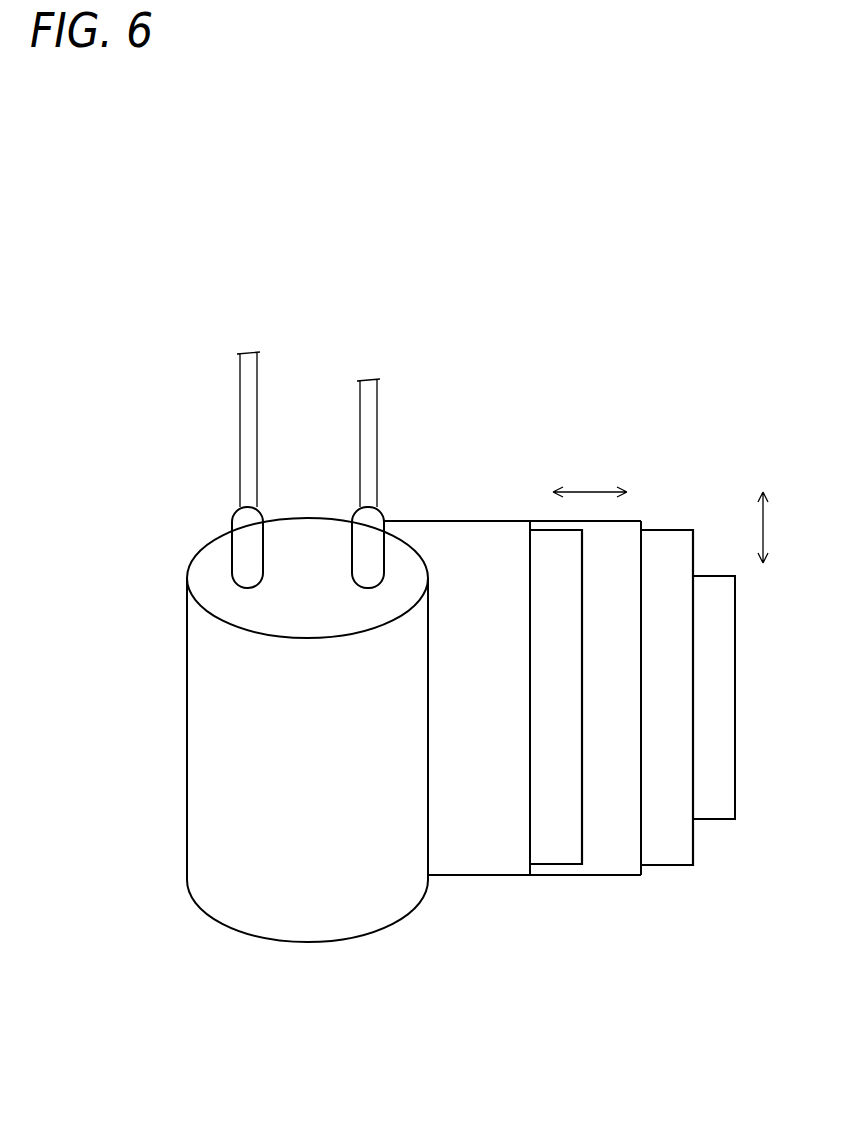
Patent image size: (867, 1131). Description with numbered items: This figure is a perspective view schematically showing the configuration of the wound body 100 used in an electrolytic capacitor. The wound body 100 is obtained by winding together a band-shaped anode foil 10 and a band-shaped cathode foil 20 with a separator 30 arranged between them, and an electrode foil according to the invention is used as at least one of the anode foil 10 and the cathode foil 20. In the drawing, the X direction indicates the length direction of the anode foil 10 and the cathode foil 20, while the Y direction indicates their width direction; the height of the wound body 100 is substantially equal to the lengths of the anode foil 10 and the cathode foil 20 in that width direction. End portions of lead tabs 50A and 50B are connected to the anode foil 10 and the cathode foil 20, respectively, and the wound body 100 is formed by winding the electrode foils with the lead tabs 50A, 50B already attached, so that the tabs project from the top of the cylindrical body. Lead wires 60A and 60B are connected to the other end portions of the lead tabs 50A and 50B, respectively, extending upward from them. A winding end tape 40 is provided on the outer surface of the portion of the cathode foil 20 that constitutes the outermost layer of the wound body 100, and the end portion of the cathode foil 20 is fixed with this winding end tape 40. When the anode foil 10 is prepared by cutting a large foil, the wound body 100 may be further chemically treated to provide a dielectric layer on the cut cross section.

The wound body 100 is at (527, 355).
The anode foil 10 is at (567, 840).
The cathode foil 20 is at (671, 852).
The separator 30 is at (495, 842).
The winding end tape 40 is at (713, 808).
The lead tab 50A is at (239, 522).
The lead tab 50B is at (378, 525).
The lead wire 60A is at (247, 398).
The lead wire 60B is at (368, 390).